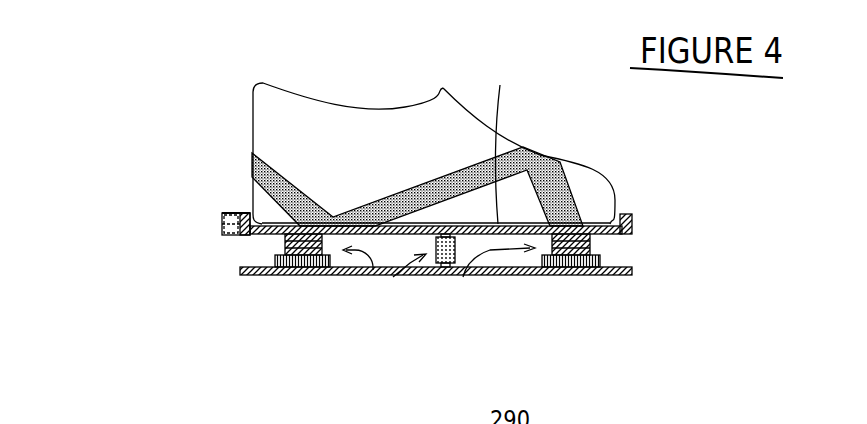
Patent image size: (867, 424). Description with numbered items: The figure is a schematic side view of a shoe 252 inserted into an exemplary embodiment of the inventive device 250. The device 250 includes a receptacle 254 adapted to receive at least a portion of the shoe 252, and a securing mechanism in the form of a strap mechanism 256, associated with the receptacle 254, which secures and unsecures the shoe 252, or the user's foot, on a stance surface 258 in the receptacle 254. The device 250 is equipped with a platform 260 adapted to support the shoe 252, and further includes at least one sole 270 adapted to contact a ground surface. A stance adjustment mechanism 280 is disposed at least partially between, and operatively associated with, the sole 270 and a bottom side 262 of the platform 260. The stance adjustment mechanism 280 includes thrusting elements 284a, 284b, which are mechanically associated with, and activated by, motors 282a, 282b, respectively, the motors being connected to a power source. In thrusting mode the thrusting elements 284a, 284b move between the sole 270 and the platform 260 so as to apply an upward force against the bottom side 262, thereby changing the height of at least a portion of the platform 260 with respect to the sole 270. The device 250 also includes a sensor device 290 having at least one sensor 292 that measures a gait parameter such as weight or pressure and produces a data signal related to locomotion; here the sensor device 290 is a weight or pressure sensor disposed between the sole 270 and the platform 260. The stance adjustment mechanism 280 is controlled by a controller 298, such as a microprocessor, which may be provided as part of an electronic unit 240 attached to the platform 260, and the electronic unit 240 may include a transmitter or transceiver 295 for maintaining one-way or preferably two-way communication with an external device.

The device 250 is at (220, 320).
The shoe 252 is at (275, 128).
The receptacle 254 is at (619, 208).
The strap mechanism 256 is at (567, 193).
The stance surface 258 is at (510, 141).
The platform 260 is at (634, 222).
The bottom side of platform 262 is at (612, 234).
The sole 270 is at (508, 277).
The electronic unit 240 is at (225, 189).
The controller 298 is at (226, 226).
The transmitter or transceiver 295 is at (222, 213).
The thrusting element 284a is at (285, 245).
The motor 282a is at (275, 258).
The thrusting element 284b is at (600, 250).
The motor 282b is at (602, 261).
The sensor 292 is at (432, 277).
The sensor device 290 is at (373, 270).
The stance adjustment mechanism 280 is at (463, 277).